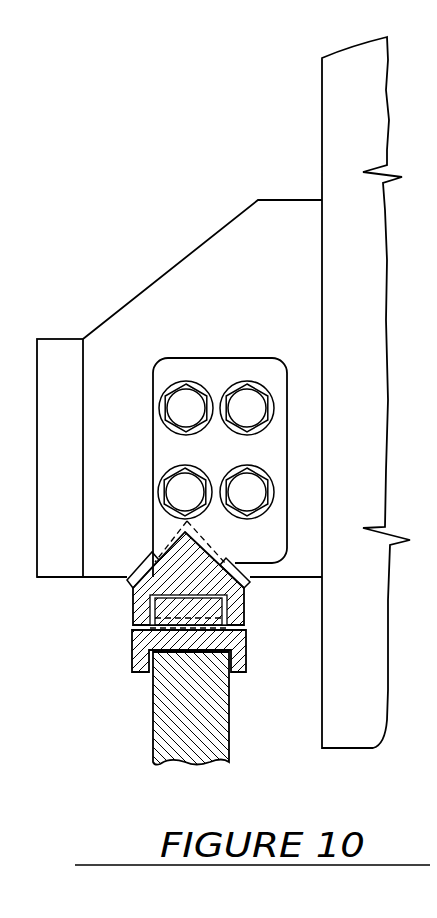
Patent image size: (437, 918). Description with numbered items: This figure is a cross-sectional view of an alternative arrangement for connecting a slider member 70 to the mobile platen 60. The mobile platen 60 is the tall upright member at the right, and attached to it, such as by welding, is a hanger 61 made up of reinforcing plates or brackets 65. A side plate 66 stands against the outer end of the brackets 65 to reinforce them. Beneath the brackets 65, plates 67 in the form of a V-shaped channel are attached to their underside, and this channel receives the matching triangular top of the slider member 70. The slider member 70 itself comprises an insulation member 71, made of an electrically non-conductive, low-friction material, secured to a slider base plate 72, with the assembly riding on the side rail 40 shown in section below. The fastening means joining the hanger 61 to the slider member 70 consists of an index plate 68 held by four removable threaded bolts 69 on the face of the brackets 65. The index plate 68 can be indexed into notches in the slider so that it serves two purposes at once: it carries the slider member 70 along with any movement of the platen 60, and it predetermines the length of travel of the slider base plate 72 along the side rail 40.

The side rail 40 is at (230, 695).
The mobile platen 60 is at (333, 112).
The hanger 61 is at (205, 212).
The reinforcing bracket 65 is at (205, 259).
The side plate 66 is at (55, 339).
The V-shape channel plate 67 is at (127, 582).
The index plate 68 is at (192, 358).
The removable threaded bolt 69 is at (252, 494).
The slider member 70 is at (119, 659).
The insulation member 71 is at (131, 602).
The slider base plate 72 is at (247, 632).